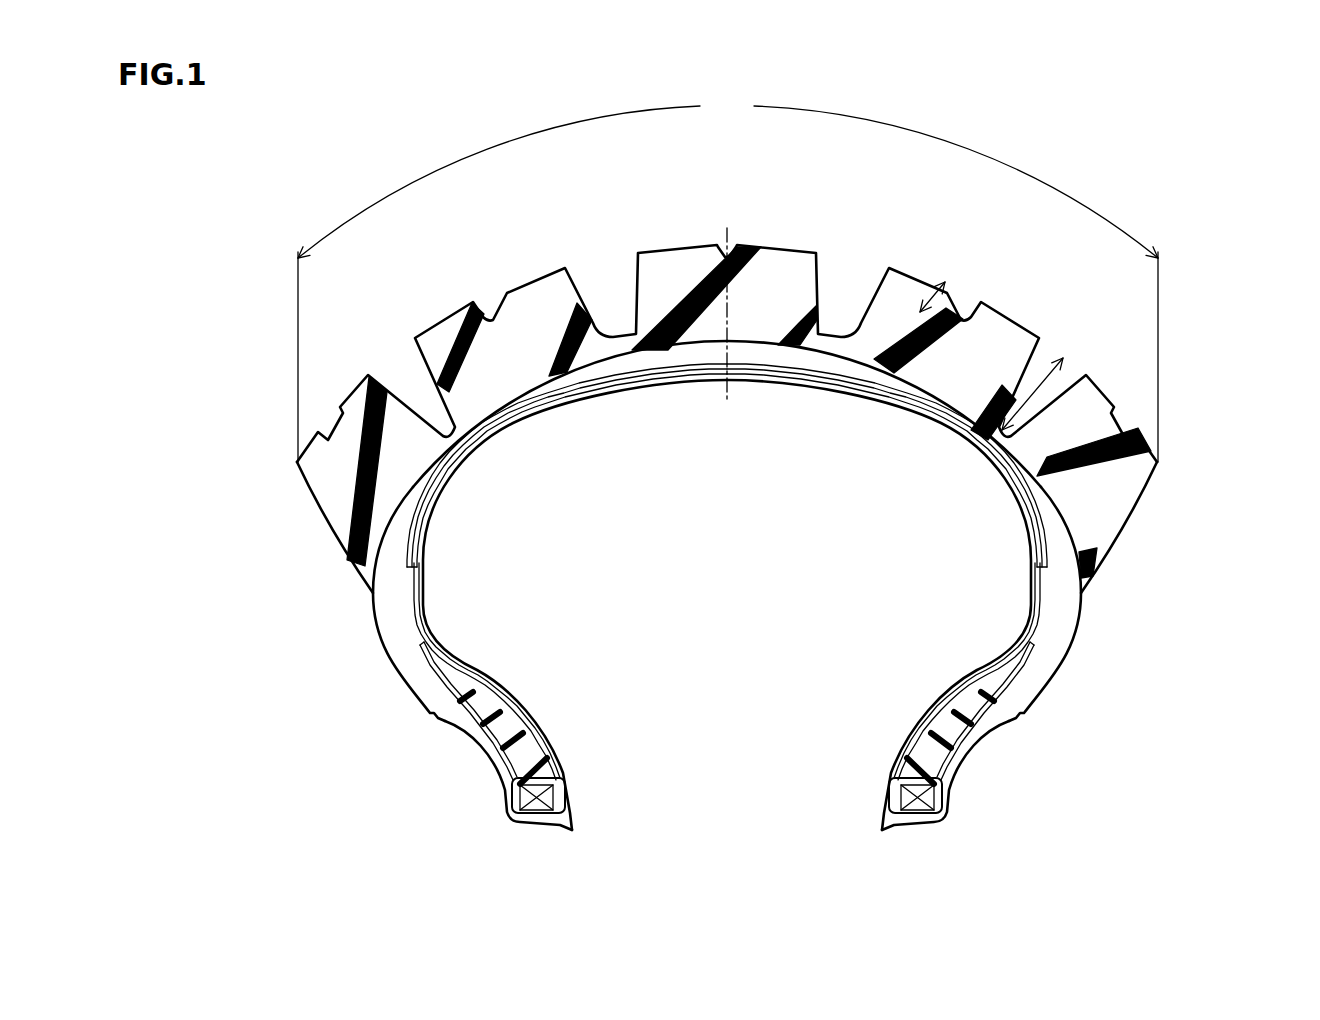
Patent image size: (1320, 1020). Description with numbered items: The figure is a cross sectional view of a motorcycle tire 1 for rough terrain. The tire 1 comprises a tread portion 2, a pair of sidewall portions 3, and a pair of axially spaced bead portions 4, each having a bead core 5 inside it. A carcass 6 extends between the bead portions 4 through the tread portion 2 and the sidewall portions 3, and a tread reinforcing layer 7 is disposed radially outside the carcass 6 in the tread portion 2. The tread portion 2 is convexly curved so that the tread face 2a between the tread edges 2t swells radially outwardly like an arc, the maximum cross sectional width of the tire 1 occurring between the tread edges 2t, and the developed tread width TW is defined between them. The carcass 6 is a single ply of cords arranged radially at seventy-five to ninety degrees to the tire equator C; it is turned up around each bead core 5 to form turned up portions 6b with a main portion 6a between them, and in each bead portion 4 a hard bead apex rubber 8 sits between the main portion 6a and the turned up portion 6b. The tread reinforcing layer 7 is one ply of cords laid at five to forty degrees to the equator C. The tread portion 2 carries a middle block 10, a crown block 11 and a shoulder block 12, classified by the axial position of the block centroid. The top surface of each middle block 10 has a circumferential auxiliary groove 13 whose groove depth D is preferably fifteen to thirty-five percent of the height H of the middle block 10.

The motorcycle tire 1 is at (1189, 205).
The tread portion 2 is at (904, 268).
The tread face 2a is at (788, 246).
The tread edges 2t is at (297, 462).
The sidewall portions 3 is at (364, 617).
The bead portions 4 is at (579, 785).
The bead core 5 is at (530, 797).
The carcass 6 is at (903, 586).
The main portion 6a is at (1038, 610).
The turned up portions 6b is at (1027, 672).
The tread reinforcing layer 7 is at (810, 373).
The bead apex rubber 8 is at (518, 753).
The middle block 10 is at (456, 312).
The crown block 11 is at (660, 244).
The shoulder block 12 is at (351, 393).
The auxiliary groove 13 is at (489, 306).
The tire equator C is at (726, 303).
The groove depth D is at (913, 306).
The height of the middle block H is at (1036, 388).
The developed tread width TW is at (728, 279).